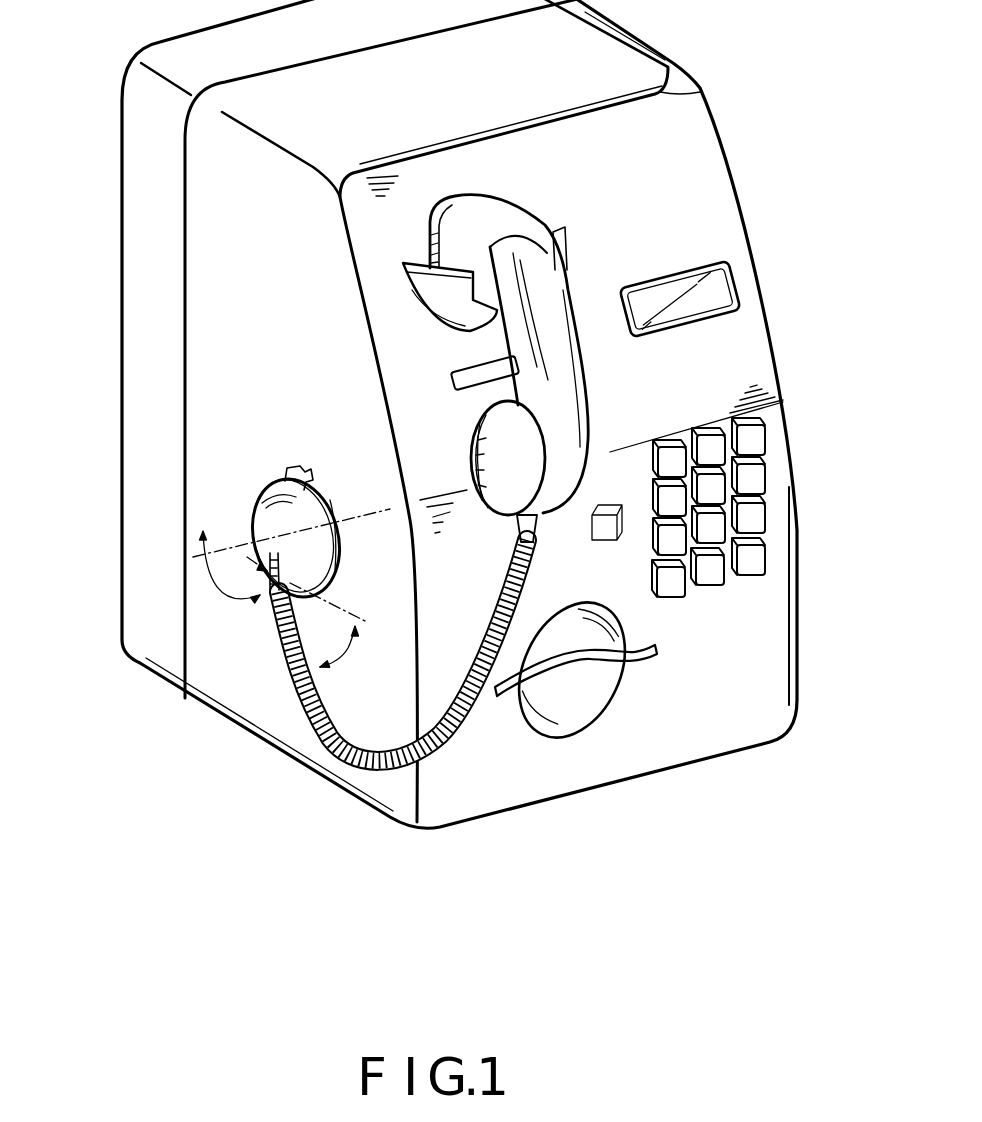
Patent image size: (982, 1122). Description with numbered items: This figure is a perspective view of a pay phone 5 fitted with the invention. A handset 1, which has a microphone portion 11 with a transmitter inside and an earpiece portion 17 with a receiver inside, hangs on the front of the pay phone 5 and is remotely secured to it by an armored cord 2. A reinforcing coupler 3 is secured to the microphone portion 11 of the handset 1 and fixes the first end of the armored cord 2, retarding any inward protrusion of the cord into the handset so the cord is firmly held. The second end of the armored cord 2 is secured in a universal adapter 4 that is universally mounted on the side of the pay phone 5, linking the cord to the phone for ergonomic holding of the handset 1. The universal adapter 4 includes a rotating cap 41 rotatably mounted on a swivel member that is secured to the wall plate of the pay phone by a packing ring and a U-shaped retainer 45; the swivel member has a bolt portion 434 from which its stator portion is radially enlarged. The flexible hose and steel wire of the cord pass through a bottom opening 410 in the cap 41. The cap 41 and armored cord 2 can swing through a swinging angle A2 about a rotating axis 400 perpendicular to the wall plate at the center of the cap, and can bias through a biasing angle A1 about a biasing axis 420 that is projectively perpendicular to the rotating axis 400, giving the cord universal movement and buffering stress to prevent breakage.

The handset 1 is at (577, 283).
The armored cord 2 is at (400, 778).
The reinforcing coupler 3 is at (547, 517).
The universal adapter 4 is at (226, 597).
The pay phone 5 is at (687, 733).
The microphone portion 11 is at (477, 440).
The earpiece portion 17 is at (426, 225).
The rotating cap 41 is at (253, 503).
The U-shaped retainer 45 is at (295, 467).
The rotating axis 400 is at (197, 552).
The bottom opening 410 is at (280, 605).
The biasing axis 420 is at (332, 586).
The bolt portion 434 is at (333, 510).
The biasing angle A1 is at (353, 657).
The swinging angle A2 is at (228, 610).